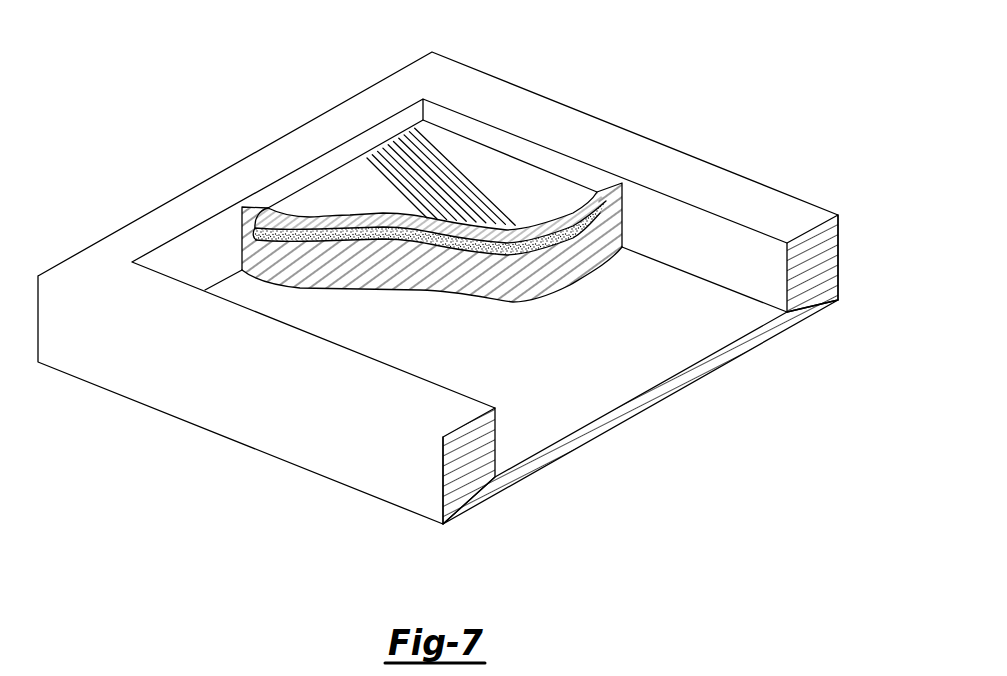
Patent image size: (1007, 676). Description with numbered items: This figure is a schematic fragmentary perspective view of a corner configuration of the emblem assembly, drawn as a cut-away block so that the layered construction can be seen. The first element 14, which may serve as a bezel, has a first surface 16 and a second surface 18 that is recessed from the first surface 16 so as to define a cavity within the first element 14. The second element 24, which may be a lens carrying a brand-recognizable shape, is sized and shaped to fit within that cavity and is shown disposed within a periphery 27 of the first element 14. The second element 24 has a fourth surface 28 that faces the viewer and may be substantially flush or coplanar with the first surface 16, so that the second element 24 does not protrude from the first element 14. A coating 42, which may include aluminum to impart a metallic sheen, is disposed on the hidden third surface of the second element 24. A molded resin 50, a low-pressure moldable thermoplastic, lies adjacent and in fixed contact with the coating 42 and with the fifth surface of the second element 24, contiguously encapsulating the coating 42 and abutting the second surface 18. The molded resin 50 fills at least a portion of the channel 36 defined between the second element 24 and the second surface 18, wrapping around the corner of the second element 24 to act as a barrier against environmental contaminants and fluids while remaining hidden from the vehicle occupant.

The periphery 27 is at (602, 71).
The first element 14 is at (127, 226).
The first surface 16 is at (160, 225).
The second surface 18 is at (574, 404).
The channel 36 is at (472, 220).
The fourth surface 28 is at (358, 201).
The second element 24 is at (437, 228).
The coating 42 is at (342, 240).
The molded resin 50 is at (552, 285).